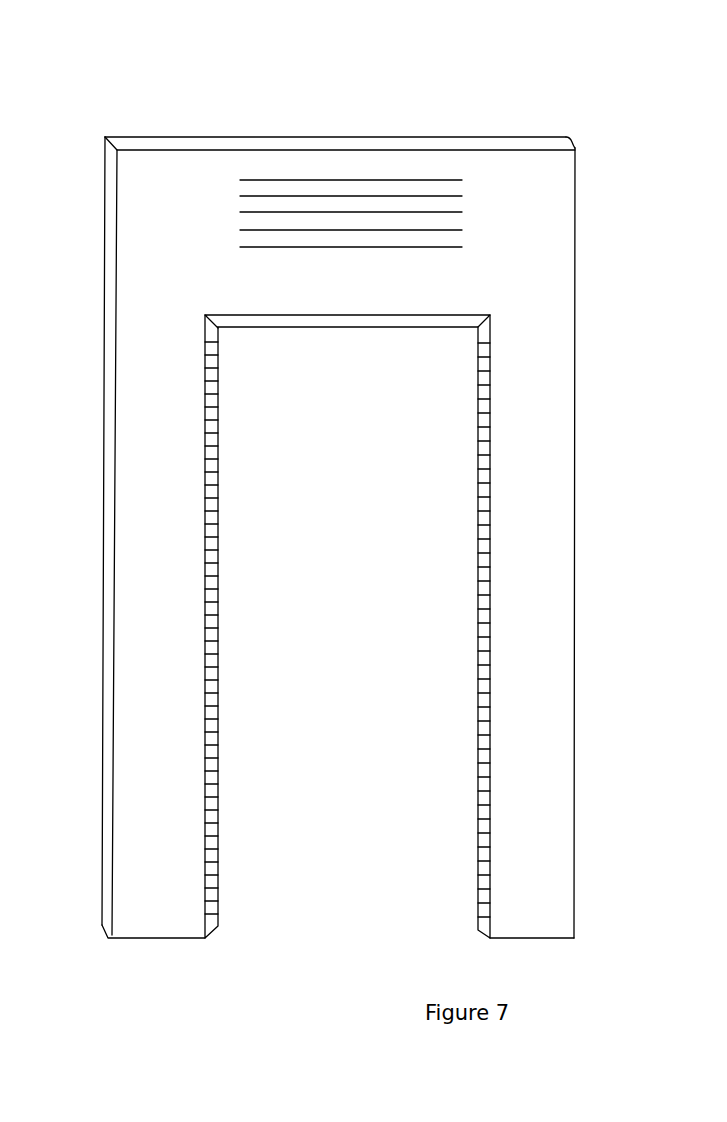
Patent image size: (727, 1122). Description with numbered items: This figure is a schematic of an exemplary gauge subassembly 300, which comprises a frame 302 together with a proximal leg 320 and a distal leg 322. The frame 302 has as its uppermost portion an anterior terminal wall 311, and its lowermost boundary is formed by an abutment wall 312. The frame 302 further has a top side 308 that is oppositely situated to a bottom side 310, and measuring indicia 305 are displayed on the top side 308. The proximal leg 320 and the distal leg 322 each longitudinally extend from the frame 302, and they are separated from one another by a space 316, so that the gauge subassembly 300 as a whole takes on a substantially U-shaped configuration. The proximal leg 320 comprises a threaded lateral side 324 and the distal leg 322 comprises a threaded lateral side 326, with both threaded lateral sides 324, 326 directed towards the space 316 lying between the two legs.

The gauge subassembly 300 is at (359, 54).
The frame 302 is at (522, 171).
The measuring indicia 305 is at (279, 176).
The top side 308 is at (179, 170).
The bottom side 310 is at (257, 132).
The anterior terminal wall 311 is at (445, 142).
The abutment wall 312 is at (433, 322).
The space 316 is at (343, 903).
The proximal leg 320 is at (95, 963).
The distal leg 322 is at (552, 679).
The threaded lateral side 324 is at (208, 820).
The threaded lateral side 326 is at (483, 785).